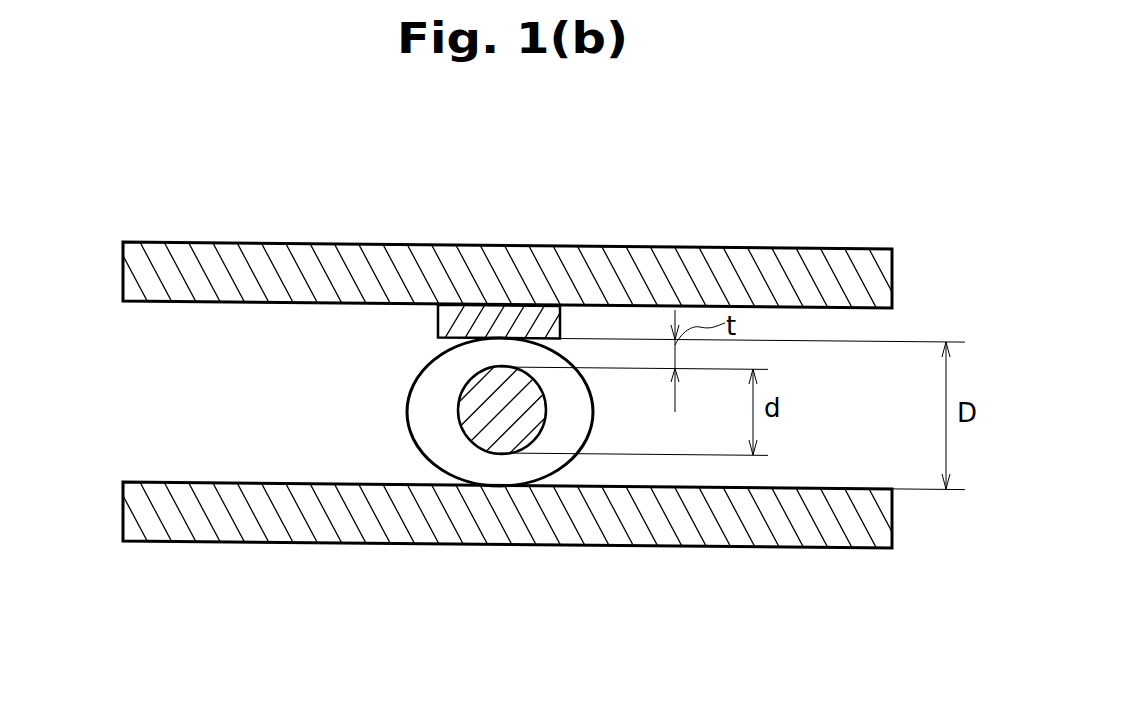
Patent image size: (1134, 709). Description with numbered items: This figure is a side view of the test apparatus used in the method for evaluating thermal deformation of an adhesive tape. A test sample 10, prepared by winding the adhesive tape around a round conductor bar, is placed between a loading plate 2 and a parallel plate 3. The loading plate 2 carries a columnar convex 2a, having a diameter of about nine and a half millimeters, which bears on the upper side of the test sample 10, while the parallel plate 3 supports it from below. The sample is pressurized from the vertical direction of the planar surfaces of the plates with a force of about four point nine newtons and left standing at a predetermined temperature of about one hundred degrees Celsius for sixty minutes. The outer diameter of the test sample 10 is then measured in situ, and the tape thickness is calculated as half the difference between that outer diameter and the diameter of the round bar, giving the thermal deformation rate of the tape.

The loading plate 2 is at (863, 258).
The convex 2a is at (528, 317).
The parallel plate 3 is at (830, 528).
The test sample 10 is at (417, 445).